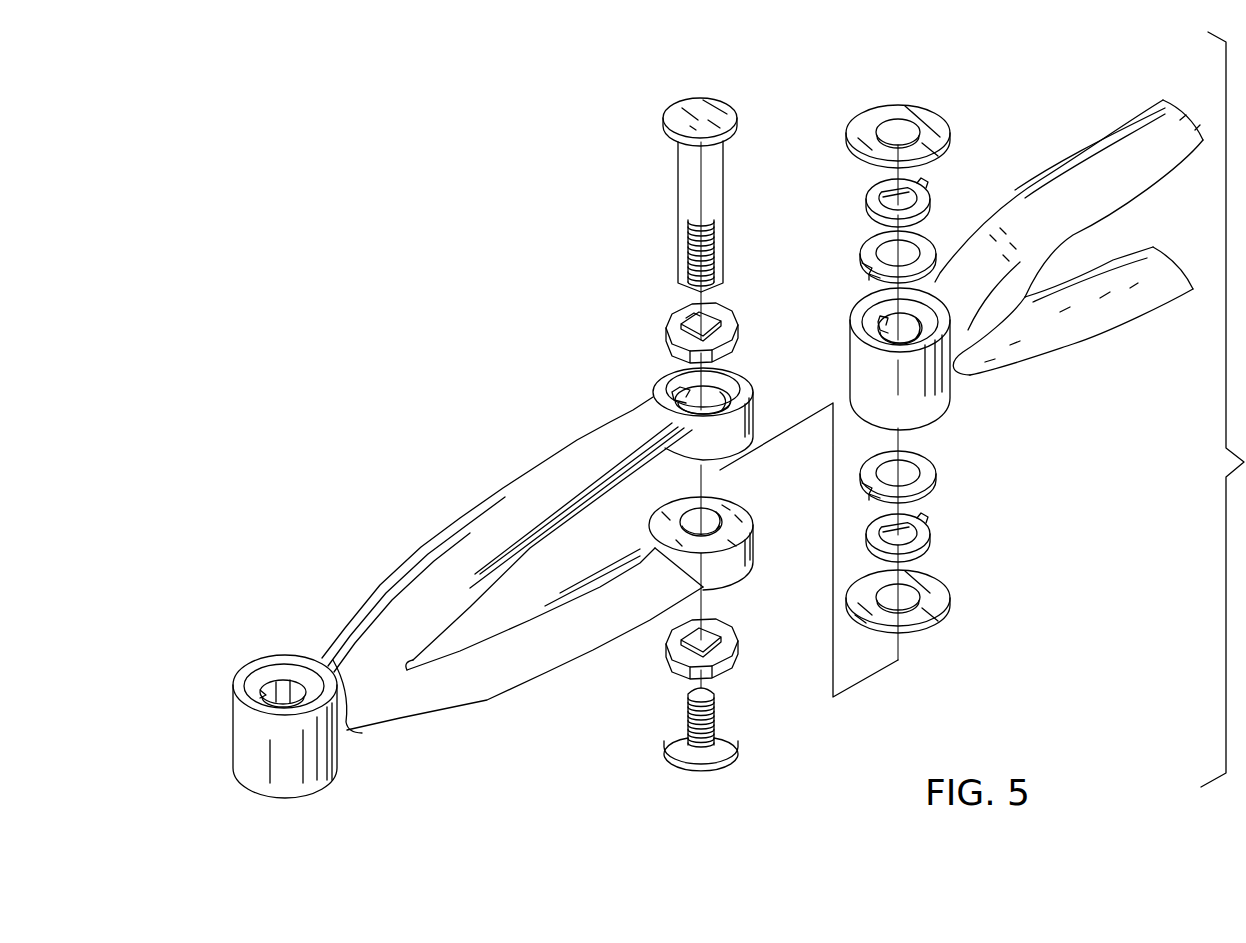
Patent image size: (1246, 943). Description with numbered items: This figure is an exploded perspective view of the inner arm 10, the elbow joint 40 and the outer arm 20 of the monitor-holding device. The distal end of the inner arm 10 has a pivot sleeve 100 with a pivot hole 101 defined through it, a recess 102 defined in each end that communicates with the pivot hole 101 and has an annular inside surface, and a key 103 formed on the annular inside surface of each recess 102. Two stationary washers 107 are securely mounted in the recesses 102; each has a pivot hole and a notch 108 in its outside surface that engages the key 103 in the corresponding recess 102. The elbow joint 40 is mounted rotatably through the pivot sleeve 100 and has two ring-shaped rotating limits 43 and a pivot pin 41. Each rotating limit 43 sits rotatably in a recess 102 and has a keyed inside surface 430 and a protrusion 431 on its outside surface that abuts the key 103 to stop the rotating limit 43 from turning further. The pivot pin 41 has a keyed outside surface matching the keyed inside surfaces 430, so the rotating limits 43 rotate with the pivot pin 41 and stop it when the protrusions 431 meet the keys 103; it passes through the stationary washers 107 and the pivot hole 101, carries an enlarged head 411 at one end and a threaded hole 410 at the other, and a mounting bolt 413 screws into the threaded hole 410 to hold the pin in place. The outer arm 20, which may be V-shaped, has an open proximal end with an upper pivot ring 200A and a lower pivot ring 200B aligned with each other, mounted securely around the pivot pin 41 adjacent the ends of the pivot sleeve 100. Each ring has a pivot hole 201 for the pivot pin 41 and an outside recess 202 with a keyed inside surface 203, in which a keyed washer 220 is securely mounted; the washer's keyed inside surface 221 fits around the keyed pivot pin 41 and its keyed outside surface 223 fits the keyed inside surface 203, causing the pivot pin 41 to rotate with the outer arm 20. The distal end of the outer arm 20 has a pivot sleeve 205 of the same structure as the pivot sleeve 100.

The inner arm 10 is at (1088, 138).
The outer arm 20 is at (487, 489).
The elbow joint 40 is at (784, 119).
The pivot pin 41 is at (678, 189).
The rotating limit 43 is at (933, 199).
The pivot sleeve 100 is at (937, 386).
The pivot hole 101 is at (905, 320).
The recess 102 is at (861, 307).
The key 103 is at (863, 322).
The stationary washer 107 is at (862, 237).
The notch 108 is at (868, 272).
The upper pivot ring 200A is at (672, 380).
The lower pivot ring 200B is at (658, 548).
The pivot hole 201 is at (722, 392).
The outside recess 202 is at (712, 380).
The keyed inside surface 203 is at (668, 397).
The pivot sleeve 205 is at (258, 790).
The keyed washer 220 is at (658, 330).
The keyed inside surface 221 is at (716, 318).
The keyed outside surface 223 is at (692, 318).
The threaded hole 410 is at (720, 223).
The enlarged head 411 is at (688, 118).
The mounting bolt 413 is at (690, 716).
The keyed inside surface 430 is at (887, 192).
The protrusion 431 is at (922, 184).